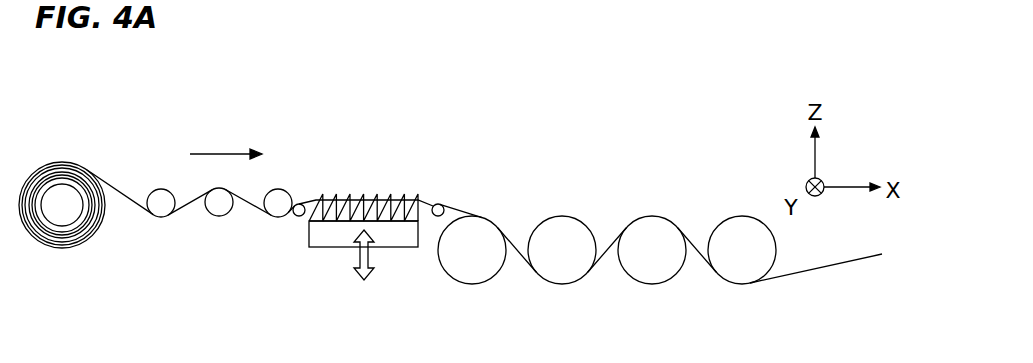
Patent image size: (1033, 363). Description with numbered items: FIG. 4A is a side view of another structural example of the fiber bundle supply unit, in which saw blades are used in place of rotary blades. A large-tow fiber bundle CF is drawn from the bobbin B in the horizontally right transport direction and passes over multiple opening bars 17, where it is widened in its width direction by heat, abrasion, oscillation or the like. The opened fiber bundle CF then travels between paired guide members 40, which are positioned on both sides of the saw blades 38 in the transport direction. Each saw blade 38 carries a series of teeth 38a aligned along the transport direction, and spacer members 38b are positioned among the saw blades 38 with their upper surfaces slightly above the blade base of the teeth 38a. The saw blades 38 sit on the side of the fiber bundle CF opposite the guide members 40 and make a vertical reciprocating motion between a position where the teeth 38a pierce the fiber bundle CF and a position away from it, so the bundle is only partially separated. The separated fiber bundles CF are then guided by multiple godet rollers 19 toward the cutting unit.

The bobbin B is at (85, 240).
The fiber bundle CF is at (117, 186).
The opening bar 17 is at (218, 208).
The guide member 40 is at (300, 205).
The saw blade 38 is at (375, 226).
The teeth 38a is at (363, 207).
The spacer member 38b is at (387, 217).
The godet roller 19 is at (565, 225).